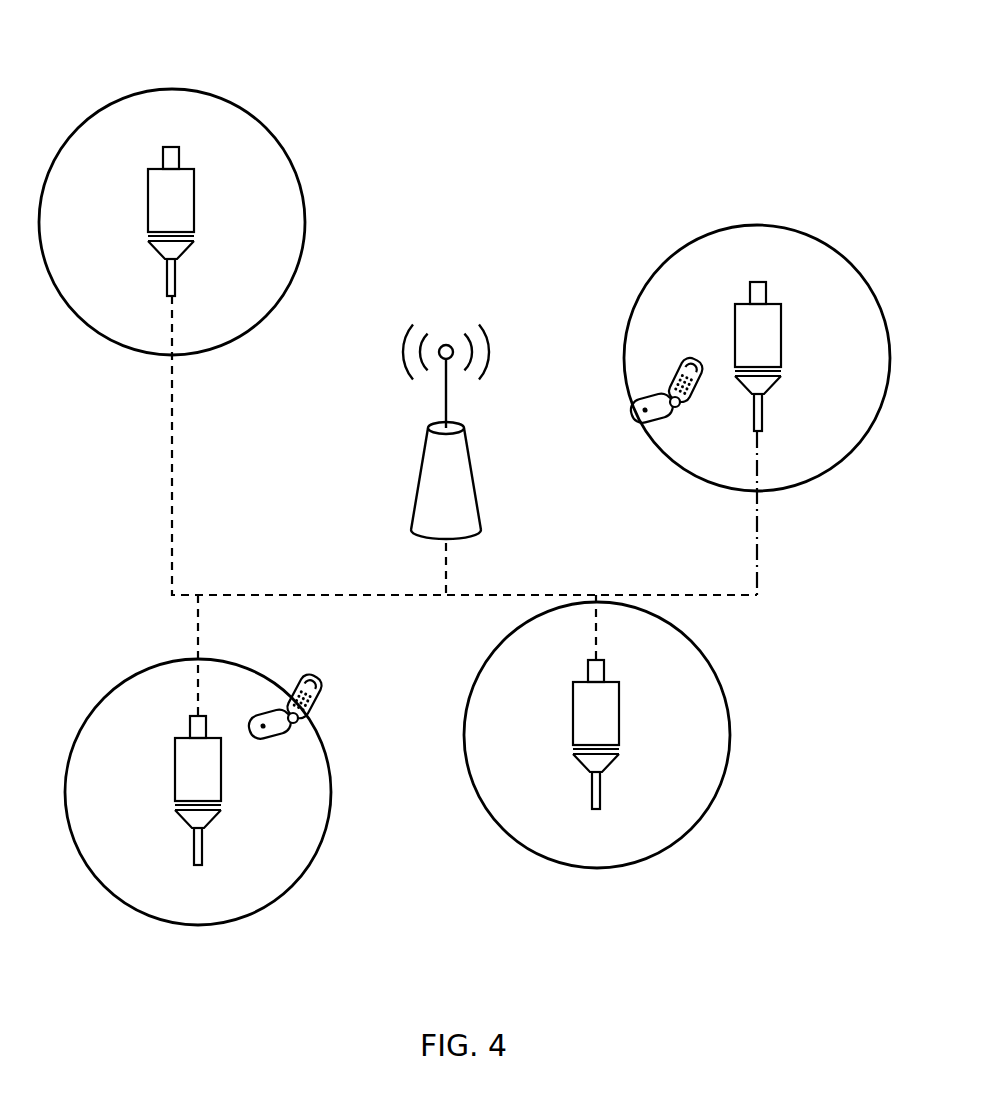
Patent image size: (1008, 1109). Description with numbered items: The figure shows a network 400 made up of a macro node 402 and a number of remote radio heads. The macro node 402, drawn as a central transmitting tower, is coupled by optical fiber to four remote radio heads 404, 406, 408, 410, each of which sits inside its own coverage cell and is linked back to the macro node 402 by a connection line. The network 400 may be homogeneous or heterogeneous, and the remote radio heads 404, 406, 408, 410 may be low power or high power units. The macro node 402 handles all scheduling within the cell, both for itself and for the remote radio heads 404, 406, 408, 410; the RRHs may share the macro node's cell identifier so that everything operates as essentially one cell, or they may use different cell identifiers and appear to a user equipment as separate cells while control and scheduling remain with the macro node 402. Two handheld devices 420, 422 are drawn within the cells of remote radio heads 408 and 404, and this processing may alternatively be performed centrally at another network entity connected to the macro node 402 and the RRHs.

The network 400 is at (593, 44).
The macro node 402 is at (472, 463).
The remote radio head 404 is at (781, 345).
The remote radio head 406 is at (619, 723).
The remote radio head 408 is at (221, 780).
The remote radio head 410 is at (194, 207).
The mobile device 420 is at (302, 672).
The mobile device 422 is at (663, 418).